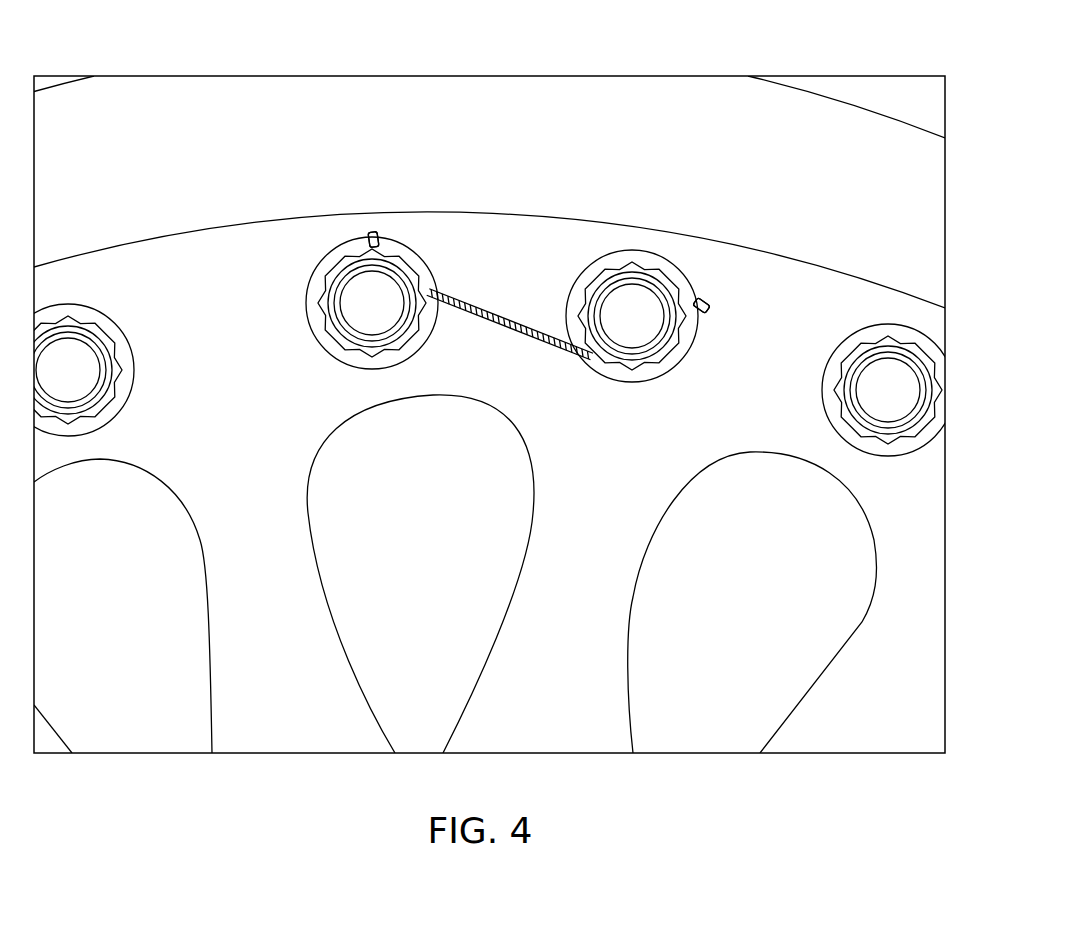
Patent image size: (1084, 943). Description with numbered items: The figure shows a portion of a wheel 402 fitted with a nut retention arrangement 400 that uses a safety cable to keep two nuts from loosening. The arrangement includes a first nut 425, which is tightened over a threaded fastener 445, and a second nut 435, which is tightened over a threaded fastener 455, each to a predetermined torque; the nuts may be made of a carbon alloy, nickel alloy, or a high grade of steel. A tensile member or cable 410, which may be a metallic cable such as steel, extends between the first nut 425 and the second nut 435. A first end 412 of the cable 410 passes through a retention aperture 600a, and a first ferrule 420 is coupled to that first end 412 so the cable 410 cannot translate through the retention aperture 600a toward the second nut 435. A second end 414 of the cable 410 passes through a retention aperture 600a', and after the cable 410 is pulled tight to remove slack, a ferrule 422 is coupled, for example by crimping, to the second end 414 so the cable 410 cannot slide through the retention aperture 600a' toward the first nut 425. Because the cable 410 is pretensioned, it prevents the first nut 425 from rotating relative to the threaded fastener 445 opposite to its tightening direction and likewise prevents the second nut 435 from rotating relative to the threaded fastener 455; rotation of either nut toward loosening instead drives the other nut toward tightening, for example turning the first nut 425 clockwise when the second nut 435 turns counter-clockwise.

The nut retention arrangement 400 is at (463, 136).
The wheel 402 is at (968, 137).
The tensile member (safety cable) 410 is at (505, 302).
The first end of cable 412 is at (357, 289).
The second end of cable 414 is at (658, 299).
The first ferrule 420 is at (371, 235).
The ferrule 422 is at (707, 308).
The first nut 425 is at (340, 323).
The second nut 435 is at (615, 273).
The threaded fastener 445 is at (320, 303).
The threaded fastener 455 is at (632, 268).
The retention aperture 600a is at (324, 216).
The retention aperture 600a' is at (722, 265).